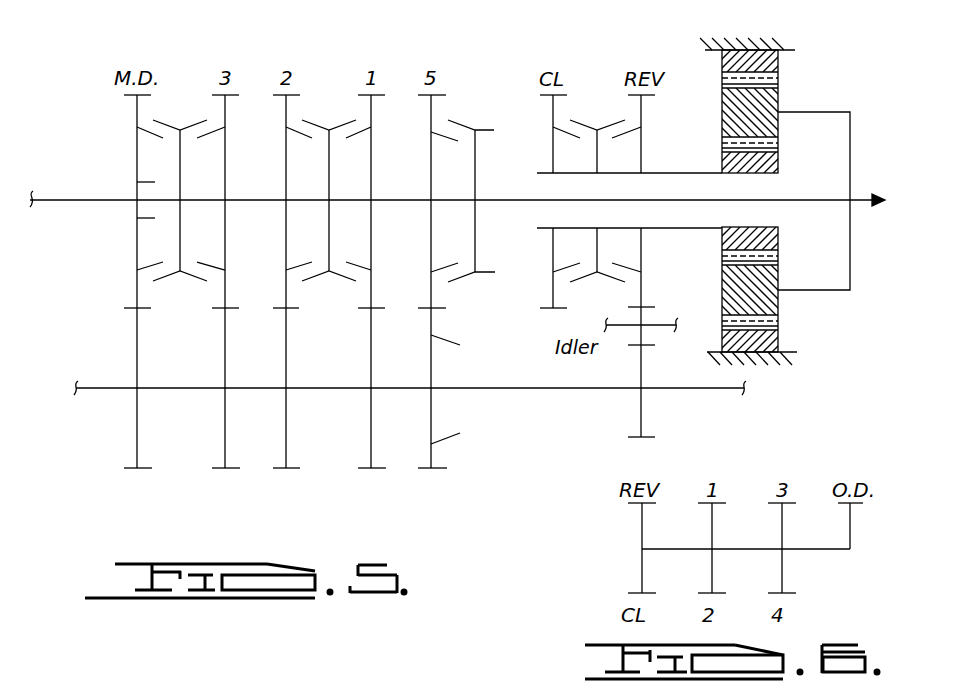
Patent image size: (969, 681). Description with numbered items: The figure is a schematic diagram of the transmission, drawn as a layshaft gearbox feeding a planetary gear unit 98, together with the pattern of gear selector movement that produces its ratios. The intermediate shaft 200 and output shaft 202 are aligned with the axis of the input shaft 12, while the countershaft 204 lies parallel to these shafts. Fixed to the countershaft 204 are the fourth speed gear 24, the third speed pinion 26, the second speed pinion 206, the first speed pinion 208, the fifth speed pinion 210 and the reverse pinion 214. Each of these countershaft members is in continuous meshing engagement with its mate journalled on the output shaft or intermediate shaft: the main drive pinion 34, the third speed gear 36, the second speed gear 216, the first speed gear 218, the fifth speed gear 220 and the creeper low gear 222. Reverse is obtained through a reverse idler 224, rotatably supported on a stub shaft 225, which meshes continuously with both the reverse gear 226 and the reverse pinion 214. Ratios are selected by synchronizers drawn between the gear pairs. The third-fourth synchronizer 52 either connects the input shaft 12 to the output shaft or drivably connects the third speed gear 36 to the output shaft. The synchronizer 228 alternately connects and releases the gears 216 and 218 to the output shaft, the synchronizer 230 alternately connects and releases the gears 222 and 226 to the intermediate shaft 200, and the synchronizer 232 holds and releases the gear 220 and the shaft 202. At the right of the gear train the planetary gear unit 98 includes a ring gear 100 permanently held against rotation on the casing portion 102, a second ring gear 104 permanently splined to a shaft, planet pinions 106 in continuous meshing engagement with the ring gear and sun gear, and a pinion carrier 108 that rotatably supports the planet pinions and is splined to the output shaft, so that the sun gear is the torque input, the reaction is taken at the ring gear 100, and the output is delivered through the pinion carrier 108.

The input shaft 12 is at (65, 197).
The fourth speed gear 24 is at (136, 450).
The third speed pinion 26 is at (226, 430).
The main drive pinion 34 is at (137, 125).
The third speed gear 36 is at (225, 117).
The 3-4 synchronizer 52 is at (183, 288).
The planetary gear unit 98 is at (698, 125).
The ring gear 100 is at (762, 65).
The casing portion 102 is at (752, 44).
The ring gear 104 is at (763, 168).
The planet pinions 106 is at (762, 100).
The pinion carrier 108 is at (850, 160).
The intermediate shaft 200 is at (671, 228).
The output shaft 202 is at (503, 200).
The countershaft 204 is at (313, 392).
The second speed pinion 206 is at (286, 448).
The first speed pinion 208 is at (371, 448).
The fifth speed pinion 210 is at (431, 450).
The reverse pinion 214 is at (643, 417).
The second speed gear 216 is at (284, 113).
The first speed gear 218 is at (370, 110).
The fifth speed gear 220 is at (431, 110).
The creeper low gear 222 is at (553, 108).
The reverse idler 224 is at (645, 333).
The stub shaft 225 is at (661, 327).
The reverse gear 226 is at (643, 100).
The synchronizer 228 is at (331, 290).
The synchronizer 230 is at (595, 112).
The synchronizer 232 is at (473, 118).